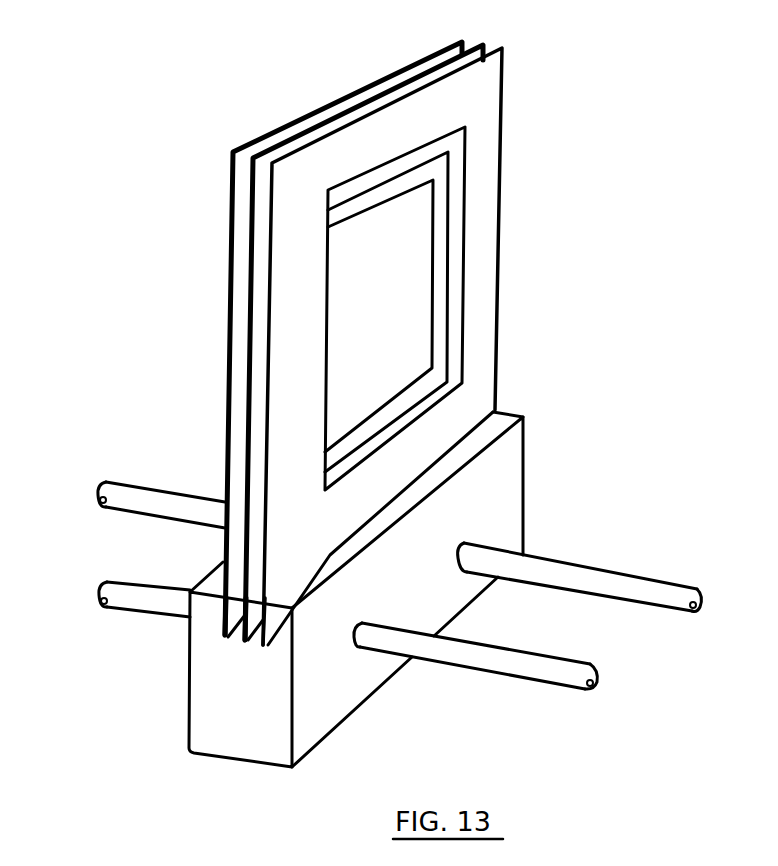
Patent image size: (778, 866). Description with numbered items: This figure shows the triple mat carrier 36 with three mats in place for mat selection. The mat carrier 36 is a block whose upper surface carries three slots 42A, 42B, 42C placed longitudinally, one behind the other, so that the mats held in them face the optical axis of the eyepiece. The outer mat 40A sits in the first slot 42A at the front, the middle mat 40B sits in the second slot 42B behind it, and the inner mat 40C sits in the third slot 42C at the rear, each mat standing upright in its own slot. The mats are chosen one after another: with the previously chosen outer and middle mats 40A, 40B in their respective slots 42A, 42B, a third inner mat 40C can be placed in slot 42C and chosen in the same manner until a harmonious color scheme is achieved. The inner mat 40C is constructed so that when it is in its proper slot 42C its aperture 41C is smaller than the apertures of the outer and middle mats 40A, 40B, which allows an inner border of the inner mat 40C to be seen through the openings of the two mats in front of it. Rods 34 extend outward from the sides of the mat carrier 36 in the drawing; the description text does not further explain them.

The support rods 34 is at (142, 597).
The triple mat carrier 36 is at (323, 703).
The outer mat 40A is at (492, 123).
The middle mat 40B is at (457, 212).
The inner mat 40C is at (437, 290).
The aperture of inner mat 41C is at (382, 363).
The first slot 42A is at (263, 640).
The second slot 42B is at (245, 635).
The third slot 42C is at (220, 632).